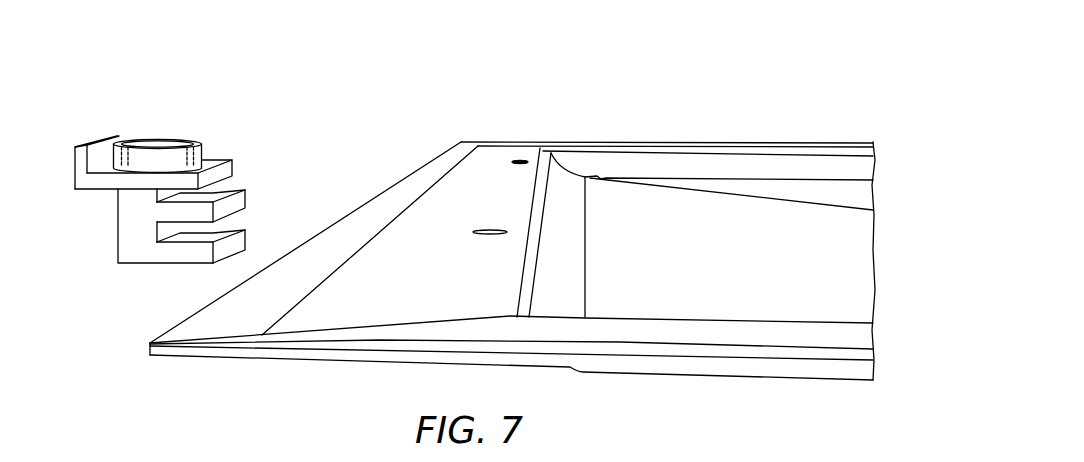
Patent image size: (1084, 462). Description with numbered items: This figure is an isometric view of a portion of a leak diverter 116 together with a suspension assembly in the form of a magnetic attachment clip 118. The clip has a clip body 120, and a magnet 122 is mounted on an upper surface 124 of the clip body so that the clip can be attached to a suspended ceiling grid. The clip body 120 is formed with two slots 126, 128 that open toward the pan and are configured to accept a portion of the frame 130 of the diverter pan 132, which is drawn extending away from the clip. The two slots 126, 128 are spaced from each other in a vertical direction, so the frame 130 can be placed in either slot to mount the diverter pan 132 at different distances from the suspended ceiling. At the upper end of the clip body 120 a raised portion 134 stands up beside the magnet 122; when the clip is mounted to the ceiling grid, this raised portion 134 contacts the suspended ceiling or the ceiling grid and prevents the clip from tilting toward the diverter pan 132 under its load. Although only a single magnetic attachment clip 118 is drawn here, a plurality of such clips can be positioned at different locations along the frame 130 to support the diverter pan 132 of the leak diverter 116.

The leak diverter 116 is at (399, 149).
The magnetic attachment clip 118 is at (129, 282).
The clip body 120 is at (133, 240).
The magnet 122 is at (180, 145).
The upper surface 124 is at (210, 167).
The slot 126 is at (232, 188).
The slot 128 is at (232, 225).
The frame 130 is at (240, 322).
The diverter pan 132 is at (760, 223).
The raised portion 134 is at (82, 160).